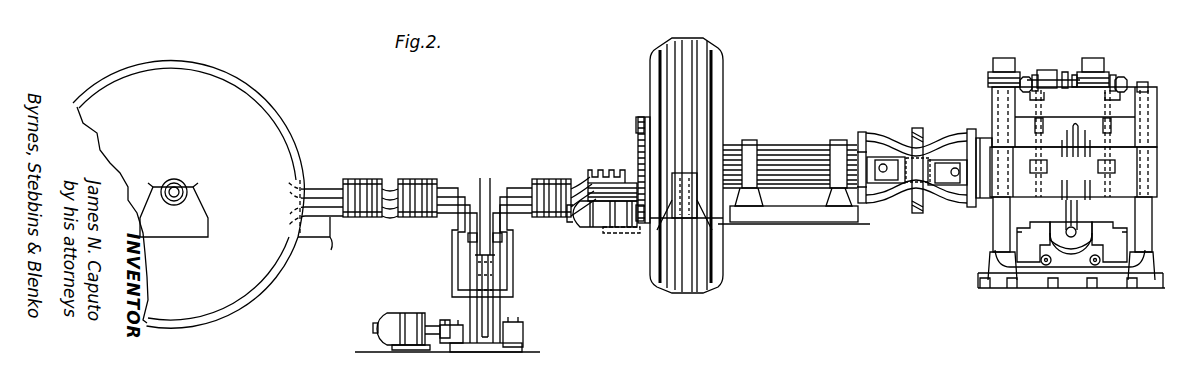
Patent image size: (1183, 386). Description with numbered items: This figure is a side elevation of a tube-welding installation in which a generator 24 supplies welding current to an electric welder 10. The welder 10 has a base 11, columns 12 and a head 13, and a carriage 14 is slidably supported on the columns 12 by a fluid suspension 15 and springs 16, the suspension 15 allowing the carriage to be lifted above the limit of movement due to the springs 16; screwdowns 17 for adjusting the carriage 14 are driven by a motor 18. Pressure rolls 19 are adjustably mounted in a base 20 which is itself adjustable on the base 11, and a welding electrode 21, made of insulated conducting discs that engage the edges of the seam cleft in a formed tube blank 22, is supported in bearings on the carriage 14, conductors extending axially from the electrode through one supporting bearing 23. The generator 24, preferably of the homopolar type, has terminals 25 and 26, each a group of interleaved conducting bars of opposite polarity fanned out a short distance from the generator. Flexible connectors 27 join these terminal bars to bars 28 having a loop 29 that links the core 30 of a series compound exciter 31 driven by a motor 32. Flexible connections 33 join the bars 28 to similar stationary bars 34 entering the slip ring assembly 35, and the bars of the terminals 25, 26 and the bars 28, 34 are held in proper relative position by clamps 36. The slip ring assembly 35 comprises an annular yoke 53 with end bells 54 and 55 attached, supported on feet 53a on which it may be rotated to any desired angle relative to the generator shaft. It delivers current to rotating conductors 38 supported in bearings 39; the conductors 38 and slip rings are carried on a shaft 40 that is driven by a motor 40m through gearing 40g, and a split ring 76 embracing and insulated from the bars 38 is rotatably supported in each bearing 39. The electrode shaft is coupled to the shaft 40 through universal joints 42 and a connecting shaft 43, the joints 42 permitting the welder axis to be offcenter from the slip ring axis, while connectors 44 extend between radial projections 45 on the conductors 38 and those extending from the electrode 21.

The electric welder 10 is at (1054, 22).
The base 11 is at (1120, 288).
The columns 12 is at (1000, 256).
The head 13 is at (1012, 100).
The carriage 14 is at (1000, 206).
The fluid suspension 15 is at (1035, 76).
The springs 16 is at (1025, 78).
The screwdowns 17 is at (1000, 74).
The motor 18 is at (1050, 70).
The pressure rolls 19 is at (1076, 231).
The base 20 is at (1075, 265).
The welding electrode 21 is at (1064, 208).
The formed tube blank 22 is at (1043, 258).
The supporting bearing 23 is at (988, 152).
The generator 24 is at (248, 111).
The generator terminal 25 is at (312, 183).
The generator terminal 26 is at (317, 243).
The flexible connectors 27 is at (393, 178).
The bars 28 is at (502, 192).
The loop 29 is at (502, 277).
The core 30 is at (490, 305).
The series compound exciter 31 is at (468, 376).
The motor 32 is at (407, 318).
The flexible connections 33 is at (588, 180).
The bars 34 is at (612, 230).
The slip ring assembly 35 is at (674, 27).
The clamps 36 is at (400, 219).
The rotating conductors 38 is at (780, 155).
The bearings 39 is at (818, 200).
The shaft 40 is at (638, 158).
The gearing 40g is at (638, 118).
The motor 40m is at (585, 218).
The universal joints 42 is at (885, 165).
The connecting shaft 43 is at (912, 176).
The connectors 44 is at (926, 146).
The radial projections 45 is at (868, 140).
The annular yoke 53 is at (695, 70).
The feet 53a is at (690, 220).
The end bell 54 is at (660, 63).
The end bell 55 is at (722, 85).
The split ring 76 is at (745, 140).